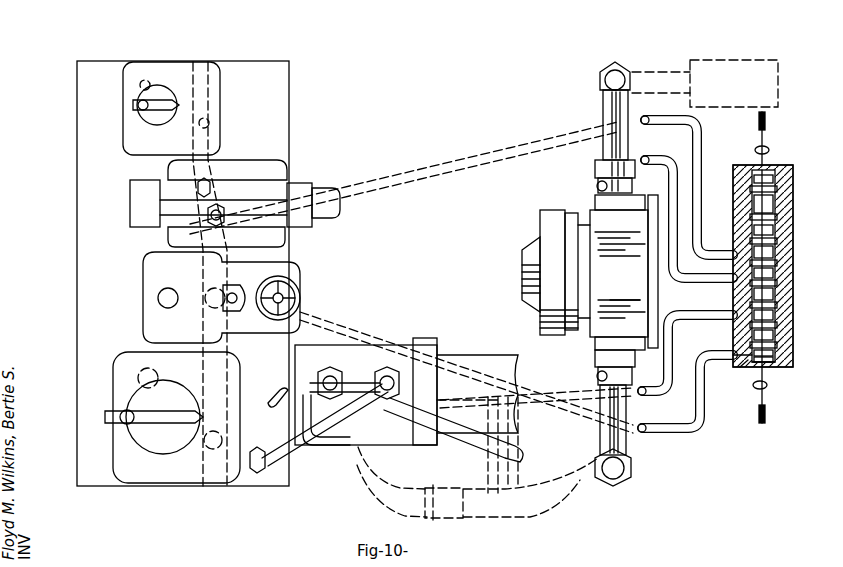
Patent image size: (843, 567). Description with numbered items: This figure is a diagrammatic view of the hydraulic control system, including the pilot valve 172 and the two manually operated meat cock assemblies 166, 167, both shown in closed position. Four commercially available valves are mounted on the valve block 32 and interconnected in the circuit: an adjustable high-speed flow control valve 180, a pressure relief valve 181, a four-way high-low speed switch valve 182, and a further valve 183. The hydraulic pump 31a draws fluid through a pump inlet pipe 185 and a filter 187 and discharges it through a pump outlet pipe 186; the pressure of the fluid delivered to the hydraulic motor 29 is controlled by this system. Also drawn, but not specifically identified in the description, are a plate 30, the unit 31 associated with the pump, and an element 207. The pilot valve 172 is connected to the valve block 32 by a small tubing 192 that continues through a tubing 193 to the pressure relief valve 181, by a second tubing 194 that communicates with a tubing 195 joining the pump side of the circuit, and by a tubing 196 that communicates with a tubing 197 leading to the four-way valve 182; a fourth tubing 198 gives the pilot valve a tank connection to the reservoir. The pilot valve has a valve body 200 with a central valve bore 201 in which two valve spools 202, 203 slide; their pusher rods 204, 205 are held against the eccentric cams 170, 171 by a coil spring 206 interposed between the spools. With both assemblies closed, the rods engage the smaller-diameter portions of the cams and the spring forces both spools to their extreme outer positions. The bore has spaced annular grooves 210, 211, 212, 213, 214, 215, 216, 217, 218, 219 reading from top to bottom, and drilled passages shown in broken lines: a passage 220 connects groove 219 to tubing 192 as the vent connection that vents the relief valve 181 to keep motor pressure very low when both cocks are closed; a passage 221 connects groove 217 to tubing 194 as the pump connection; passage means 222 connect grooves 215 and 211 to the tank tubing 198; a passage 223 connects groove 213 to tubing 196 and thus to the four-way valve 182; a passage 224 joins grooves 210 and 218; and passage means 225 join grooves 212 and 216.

The valve block 32 is at (96, 70).
The valve 183 is at (160, 70).
The four way high-low speed switch valve 182 is at (272, 163).
The pressure relief valve 181 is at (293, 277).
The adjustable high speed flow control valve 180 is at (140, 468).
The motor 29 is at (362, 355).
The mounting plate 30 is at (497, 354).
The tubing 197 is at (400, 170).
The tubing 193 is at (316, 313).
The tubing 195 is at (522, 393).
The filter 187 is at (712, 58).
The pump inlet pipe 185 is at (608, 112).
The valve body 31 is at (561, 197).
The tubing 198 is at (673, 218).
The hydraulic pump 31a is at (619, 292).
The pump outlet pipe 186 is at (616, 445).
The tubing 196 is at (690, 158).
The valve body 200 is at (730, 168).
The tubing 194 is at (700, 322).
The tubing 192 is at (688, 430).
The pusher rod 204 is at (770, 172).
The pilot valve 172 is at (797, 186).
The meat cock assembly 166 is at (770, 122).
The cam 170 is at (770, 150).
The meat cock assembly 167 is at (768, 408).
The cam 171 is at (768, 385).
The annular groove 210 is at (752, 178).
The passage means 222 is at (749, 188).
The valve spool 202 is at (752, 202).
The annular groove 212 is at (750, 216).
The passage 223 is at (752, 230).
The coil spring 206 is at (733, 268).
The annular groove 216 is at (733, 295).
The annular groove 211 is at (778, 210).
The valve bore 201 is at (778, 225).
The annular groove 213 is at (778, 242).
The annular groove 214 is at (778, 258).
The passage means 225 is at (778, 276).
The annular groove 215 is at (778, 293).
The annular groove 217 is at (778, 312).
The valve spool 203 is at (778, 330).
The passage 224 is at (778, 348).
The annular groove 218 is at (778, 355).
The annular groove 219 is at (778, 362).
The port 207 is at (802, 390).
The passage 221 is at (735, 350).
The passage 220 is at (740, 368).
The pusher rod 205 is at (756, 380).